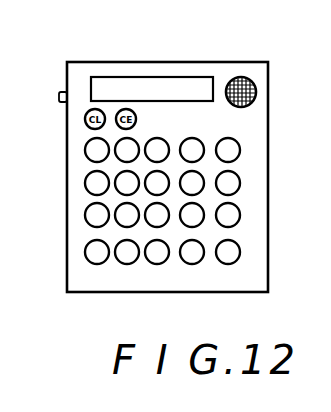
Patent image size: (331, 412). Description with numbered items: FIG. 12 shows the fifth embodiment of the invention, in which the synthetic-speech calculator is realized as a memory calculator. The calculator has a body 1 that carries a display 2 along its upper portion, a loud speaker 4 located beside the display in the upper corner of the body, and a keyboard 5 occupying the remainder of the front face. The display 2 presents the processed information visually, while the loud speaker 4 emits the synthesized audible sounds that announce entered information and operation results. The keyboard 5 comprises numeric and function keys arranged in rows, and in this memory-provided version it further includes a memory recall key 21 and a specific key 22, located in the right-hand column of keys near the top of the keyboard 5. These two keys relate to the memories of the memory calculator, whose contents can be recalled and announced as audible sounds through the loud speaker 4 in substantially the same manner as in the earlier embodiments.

The body 1 is at (105, 62).
The display 2 is at (183, 85).
The loud speaker 4 is at (256, 83).
The keyboard 5 is at (87, 155).
The memory recall key 21 is at (204, 144).
The specific key 22 is at (238, 156).